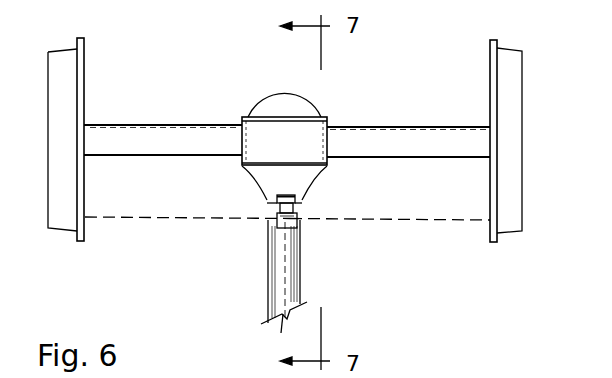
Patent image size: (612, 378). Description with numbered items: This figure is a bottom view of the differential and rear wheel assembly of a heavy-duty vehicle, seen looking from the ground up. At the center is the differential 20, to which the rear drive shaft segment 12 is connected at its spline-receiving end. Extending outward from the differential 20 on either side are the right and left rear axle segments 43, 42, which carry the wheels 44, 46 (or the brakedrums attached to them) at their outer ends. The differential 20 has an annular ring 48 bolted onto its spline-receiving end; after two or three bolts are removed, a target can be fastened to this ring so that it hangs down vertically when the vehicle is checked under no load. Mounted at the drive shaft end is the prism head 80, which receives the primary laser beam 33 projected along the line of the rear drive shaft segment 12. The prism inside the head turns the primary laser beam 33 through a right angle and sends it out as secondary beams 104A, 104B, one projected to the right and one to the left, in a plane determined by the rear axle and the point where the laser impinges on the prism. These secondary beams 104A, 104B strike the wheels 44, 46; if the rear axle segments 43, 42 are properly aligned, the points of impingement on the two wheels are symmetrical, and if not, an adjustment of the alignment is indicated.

The rear drive shaft segment 12 is at (270, 262).
The differential 20 is at (320, 100).
The primary laser beam 33 is at (285, 338).
The left rear axle segment 42 is at (366, 133).
The right rear axle segment 43 is at (128, 128).
The wheel 44 is at (512, 72).
The wheel 46 is at (67, 81).
The annular ring 48 is at (267, 203).
The prism head 80 is at (288, 218).
The secondary beam 104A is at (467, 222).
The secondary beam 104B is at (163, 218).